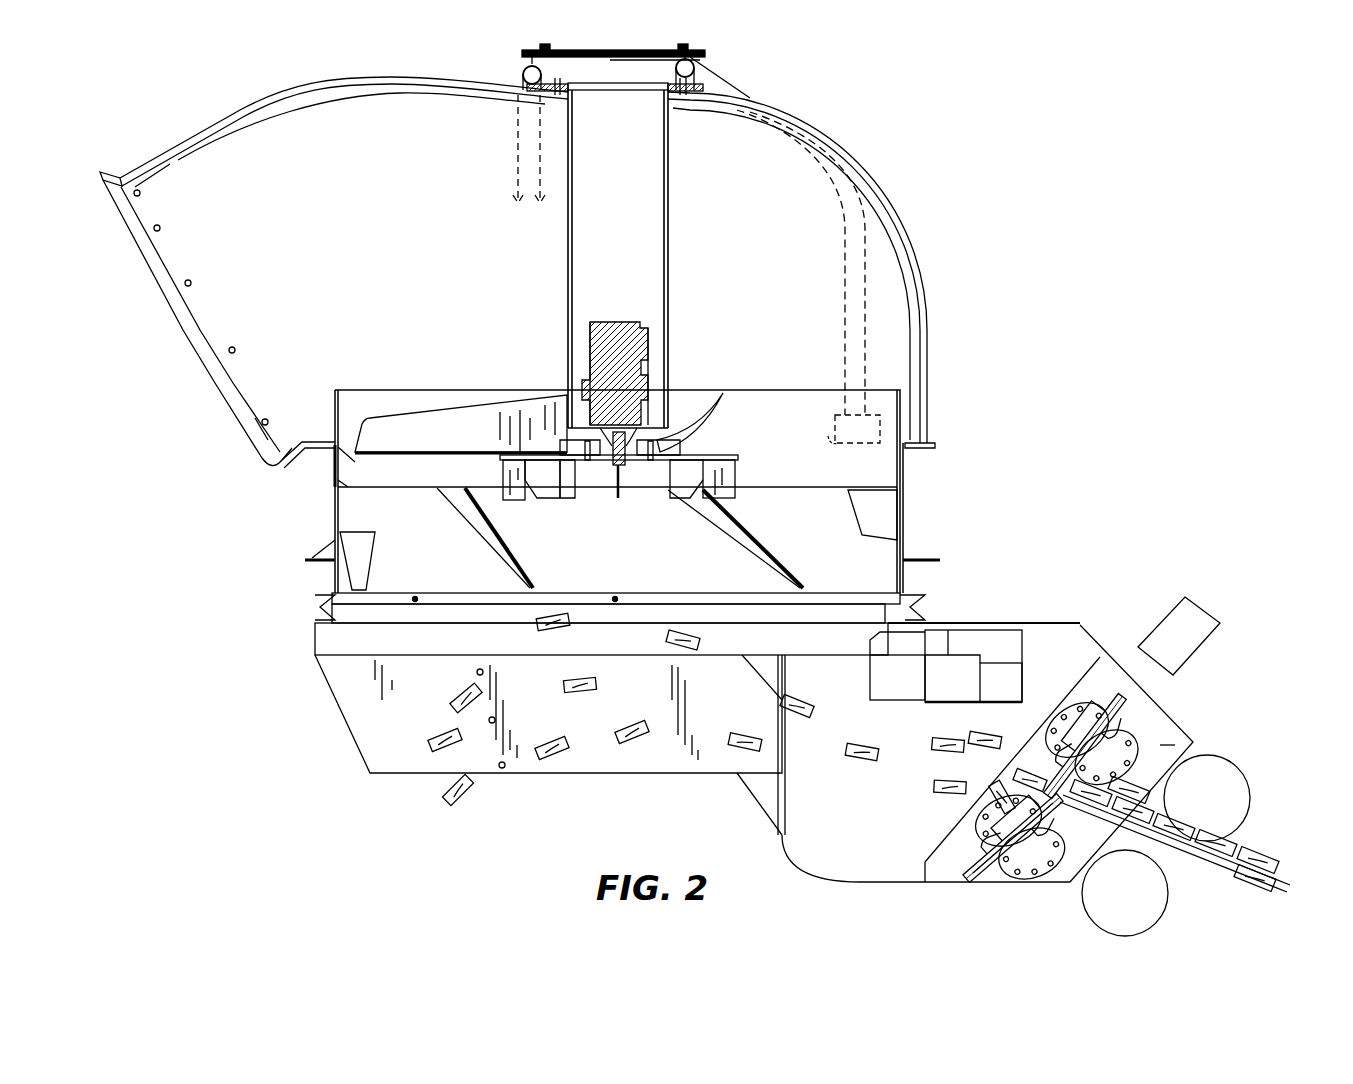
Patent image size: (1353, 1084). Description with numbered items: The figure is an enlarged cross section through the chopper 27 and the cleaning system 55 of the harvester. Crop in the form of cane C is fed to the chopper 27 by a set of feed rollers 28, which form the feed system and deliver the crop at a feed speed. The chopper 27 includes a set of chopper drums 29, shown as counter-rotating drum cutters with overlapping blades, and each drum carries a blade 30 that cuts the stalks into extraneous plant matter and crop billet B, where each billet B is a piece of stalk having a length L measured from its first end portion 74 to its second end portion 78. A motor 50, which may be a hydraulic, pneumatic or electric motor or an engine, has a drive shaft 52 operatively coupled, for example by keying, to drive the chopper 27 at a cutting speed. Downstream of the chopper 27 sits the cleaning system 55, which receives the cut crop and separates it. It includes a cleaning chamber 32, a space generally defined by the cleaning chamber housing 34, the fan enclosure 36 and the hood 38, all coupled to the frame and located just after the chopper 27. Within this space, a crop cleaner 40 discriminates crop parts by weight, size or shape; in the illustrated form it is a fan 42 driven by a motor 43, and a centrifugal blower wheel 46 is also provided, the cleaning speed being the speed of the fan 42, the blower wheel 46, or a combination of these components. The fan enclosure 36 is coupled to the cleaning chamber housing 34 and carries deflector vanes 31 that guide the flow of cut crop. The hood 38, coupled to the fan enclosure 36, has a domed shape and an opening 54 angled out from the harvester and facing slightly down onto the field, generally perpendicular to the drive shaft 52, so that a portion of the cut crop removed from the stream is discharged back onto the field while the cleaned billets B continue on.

The chopper 27 is at (1163, 747).
The feed rollers 28 is at (1215, 783).
The chopper drums 29 is at (1012, 845).
The blade 30 is at (1120, 757).
The deflector vanes 31 is at (470, 523).
The cleaning chamber 32 is at (527, 695).
The cleaning chamber housing 34 is at (323, 688).
The fan enclosure 36 is at (335, 495).
The hood 38 is at (880, 178).
The crop cleaner 40 is at (511, 367).
The fan 42 is at (505, 425).
The motor 43 is at (622, 382).
The centrifugal blower wheel 46 is at (680, 508).
The motor 50 is at (1160, 620).
The drive shaft 52 is at (1143, 665).
The opening 54 is at (170, 302).
The cleaning system 55 is at (1127, 178).
The first end portion 74 is at (612, 740).
The second end portion 78 is at (650, 726).
The crop billet B is at (960, 795).
The cane C is at (1240, 857).
The length L is at (742, 748).